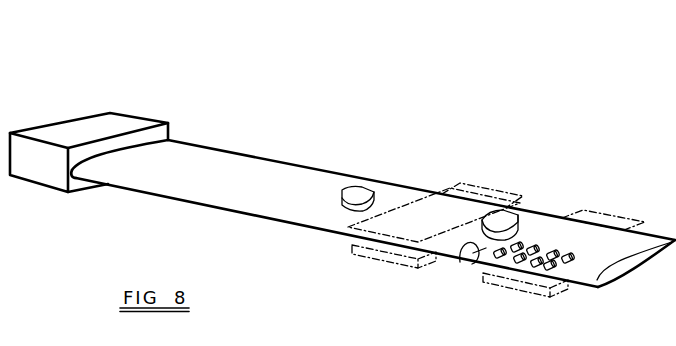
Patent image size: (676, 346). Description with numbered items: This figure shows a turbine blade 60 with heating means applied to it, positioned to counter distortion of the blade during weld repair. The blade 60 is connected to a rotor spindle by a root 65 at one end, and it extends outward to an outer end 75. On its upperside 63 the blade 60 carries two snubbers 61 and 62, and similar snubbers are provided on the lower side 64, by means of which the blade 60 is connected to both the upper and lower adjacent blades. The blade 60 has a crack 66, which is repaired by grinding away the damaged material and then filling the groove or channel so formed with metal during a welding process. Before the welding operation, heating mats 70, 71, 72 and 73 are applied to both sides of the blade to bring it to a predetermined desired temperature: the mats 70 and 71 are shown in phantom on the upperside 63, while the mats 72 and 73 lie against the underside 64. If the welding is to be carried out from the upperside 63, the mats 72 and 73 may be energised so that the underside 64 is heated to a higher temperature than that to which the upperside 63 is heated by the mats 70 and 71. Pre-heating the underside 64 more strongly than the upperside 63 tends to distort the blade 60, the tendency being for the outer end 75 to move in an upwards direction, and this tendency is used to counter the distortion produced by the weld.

The turbine blade 60 is at (294, 128).
The snubber 61 is at (356, 196).
The snubber 62 is at (520, 218).
The upperside of the blade 63 is at (190, 178).
The lower side of the blade 64 is at (244, 232).
The root 65 is at (43, 171).
The crack 66 is at (461, 255).
The heating mat 70 is at (611, 212).
The heating mat 71 is at (482, 183).
The heating mat 72 is at (528, 290).
The heating mat 73 is at (372, 258).
The outer end of the blade 75 is at (619, 268).